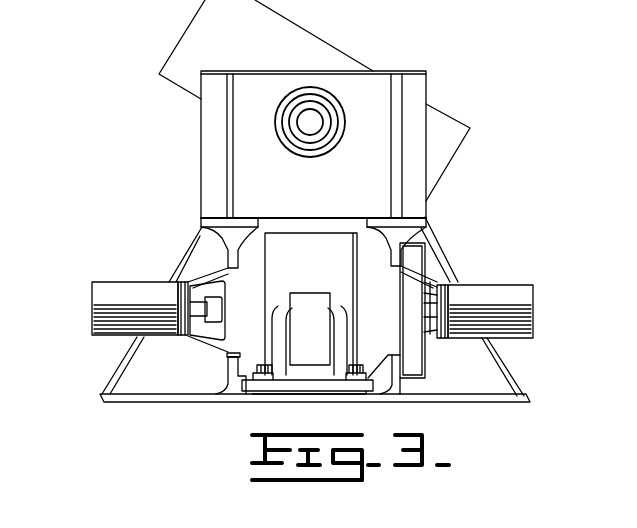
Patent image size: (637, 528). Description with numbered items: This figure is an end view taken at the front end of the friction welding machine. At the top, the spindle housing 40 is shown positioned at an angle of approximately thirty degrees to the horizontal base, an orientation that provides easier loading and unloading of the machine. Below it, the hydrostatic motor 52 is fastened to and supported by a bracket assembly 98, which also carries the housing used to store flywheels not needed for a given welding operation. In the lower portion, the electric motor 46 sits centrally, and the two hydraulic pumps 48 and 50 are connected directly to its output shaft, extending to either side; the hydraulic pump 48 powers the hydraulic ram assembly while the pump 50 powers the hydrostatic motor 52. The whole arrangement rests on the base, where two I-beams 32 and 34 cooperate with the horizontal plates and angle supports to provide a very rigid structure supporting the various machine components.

The spindle housing assembly 40 is at (308, 47).
The bracket assembly 98 is at (307, 205).
The hydrostatic motor 52 is at (314, 128).
The electric motor 46 is at (365, 266).
The hydraulic pump 48 is at (519, 297).
The hydraulic pump 50 is at (100, 299).
The I-beam 32 is at (228, 371).
The I-beam 34 is at (402, 386).